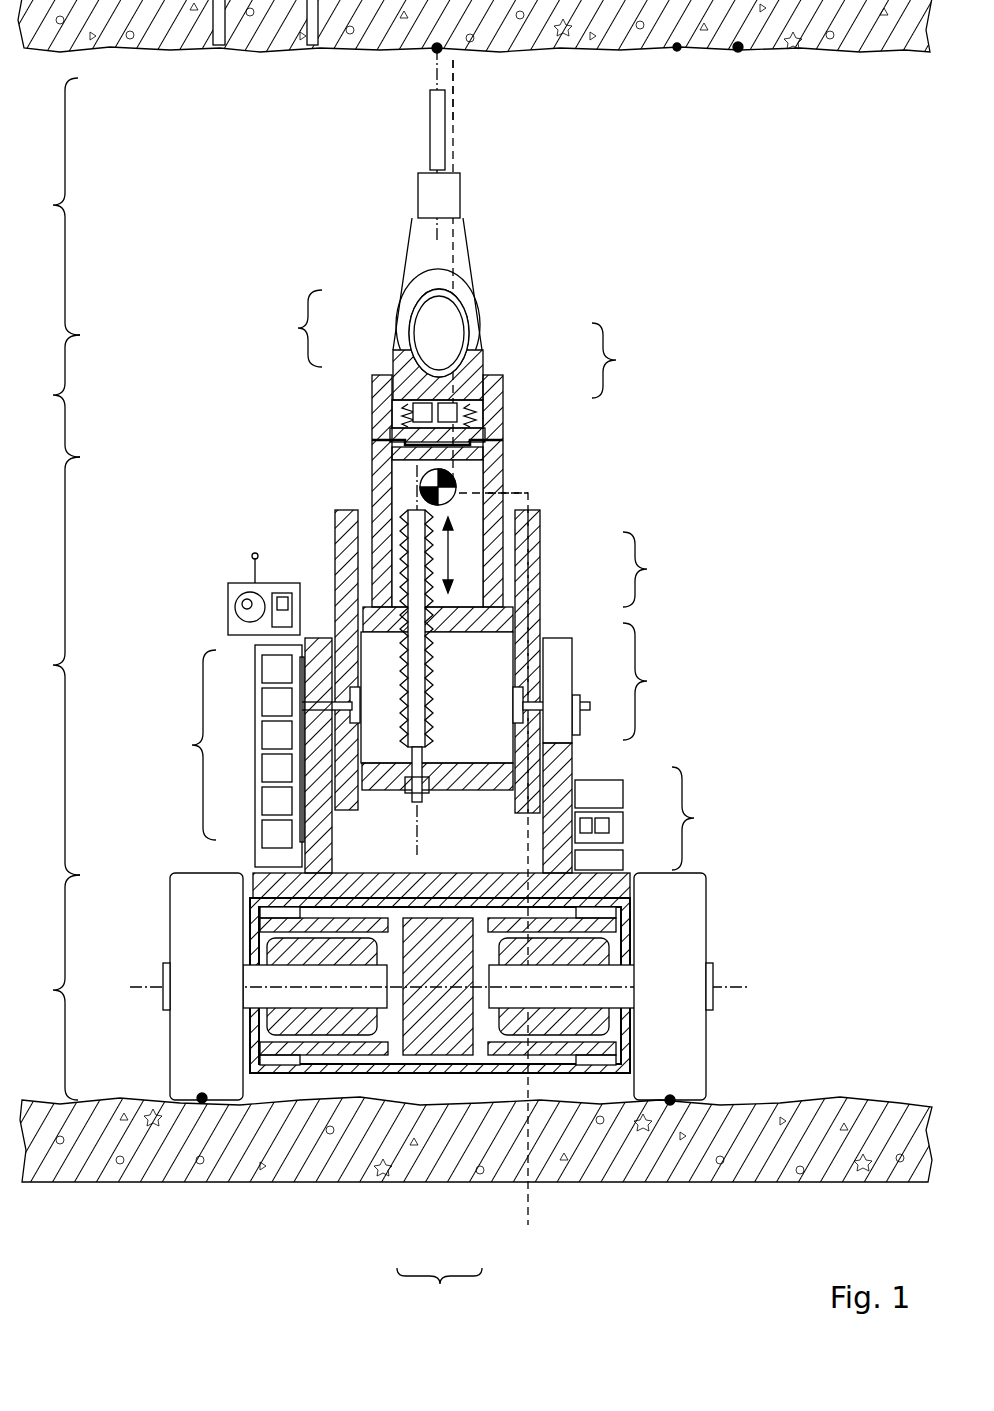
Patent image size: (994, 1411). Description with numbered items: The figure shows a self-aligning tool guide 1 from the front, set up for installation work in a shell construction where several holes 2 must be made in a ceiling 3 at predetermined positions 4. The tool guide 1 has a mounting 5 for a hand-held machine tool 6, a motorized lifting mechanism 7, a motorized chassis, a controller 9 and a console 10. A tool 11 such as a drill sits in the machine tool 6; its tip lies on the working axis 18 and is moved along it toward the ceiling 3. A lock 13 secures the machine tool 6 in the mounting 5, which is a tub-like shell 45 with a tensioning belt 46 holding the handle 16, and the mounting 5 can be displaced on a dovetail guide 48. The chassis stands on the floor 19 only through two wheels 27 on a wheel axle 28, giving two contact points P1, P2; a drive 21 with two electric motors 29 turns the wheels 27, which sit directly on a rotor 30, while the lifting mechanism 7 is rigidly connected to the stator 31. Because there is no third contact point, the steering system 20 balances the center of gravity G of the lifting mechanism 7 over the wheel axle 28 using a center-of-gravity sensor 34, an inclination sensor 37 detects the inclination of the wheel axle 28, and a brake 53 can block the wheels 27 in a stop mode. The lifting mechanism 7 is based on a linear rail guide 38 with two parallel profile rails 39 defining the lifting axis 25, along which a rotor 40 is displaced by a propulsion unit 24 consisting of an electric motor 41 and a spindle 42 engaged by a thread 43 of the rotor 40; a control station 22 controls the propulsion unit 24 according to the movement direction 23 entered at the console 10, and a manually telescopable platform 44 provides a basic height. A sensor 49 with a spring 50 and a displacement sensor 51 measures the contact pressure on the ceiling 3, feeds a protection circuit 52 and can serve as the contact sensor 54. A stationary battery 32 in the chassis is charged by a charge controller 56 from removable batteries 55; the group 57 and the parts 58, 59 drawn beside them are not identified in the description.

The self-aligning tool guide 1 is at (205, 254).
The holes 2 is at (218, 40).
The ceiling 3 is at (250, 50).
The predetermined positions 4 is at (677, 48).
The mounting 5 is at (56, 396).
The hand-held machine tool 6 is at (56, 206).
The motorized lifting mechanism 7 is at (56, 666).
The controller 9 is at (233, 756).
The console 10 is at (242, 598).
The tool 11 is at (445, 130).
The lock 13 is at (372, 292).
The handle 16 is at (442, 330).
The working axis 18 is at (453, 62).
The floor 19 is at (852, 1103).
The steering system 20 is at (275, 672).
The drive 21 is at (439, 1291).
The control station 22 is at (275, 735).
The movement direction 23 is at (450, 543).
The propulsion unit 24 is at (653, 681).
The lifting axis 25 is at (413, 505).
The wheels 27 is at (207, 1020).
The wheel axle 28 is at (728, 990).
The electric motors 29 is at (370, 1020).
The rotor 30 is at (568, 995).
The stator 31 is at (583, 925).
The stationary battery 32 is at (447, 997).
The center of gravity sensor 34 is at (275, 704).
The inclination sensor 37 is at (275, 768).
The linear rail guide 38 is at (510, 660).
The profile rails 39 is at (533, 577).
The rotor 40 is at (497, 623).
The electric motor 41 is at (480, 780).
The spindle 42 is at (417, 712).
The thread 43 is at (433, 623).
The manually telescopable platform 44 is at (555, 762).
The tub-like shell 45 is at (403, 357).
The tensioning belt 46 is at (402, 328).
The dovetail guide 48 is at (472, 442).
The contact pressure sensor 49 is at (624, 360).
The spring 50 is at (450, 413).
The displacement sensor 51 is at (462, 418).
The protection circuit 52 is at (275, 804).
The brake 53 is at (275, 837).
The contact sensor 54 is at (425, 413).
The removable batteries 55 is at (613, 800).
The charge controller 56 is at (613, 865).
The sensor unit 57 is at (702, 818).
The sensor 58 is at (610, 823).
The sensor 59 is at (590, 828).
The center of gravity G is at (445, 480).
The point of contact P1 is at (202, 1098).
The point of contact P2 is at (670, 1100).